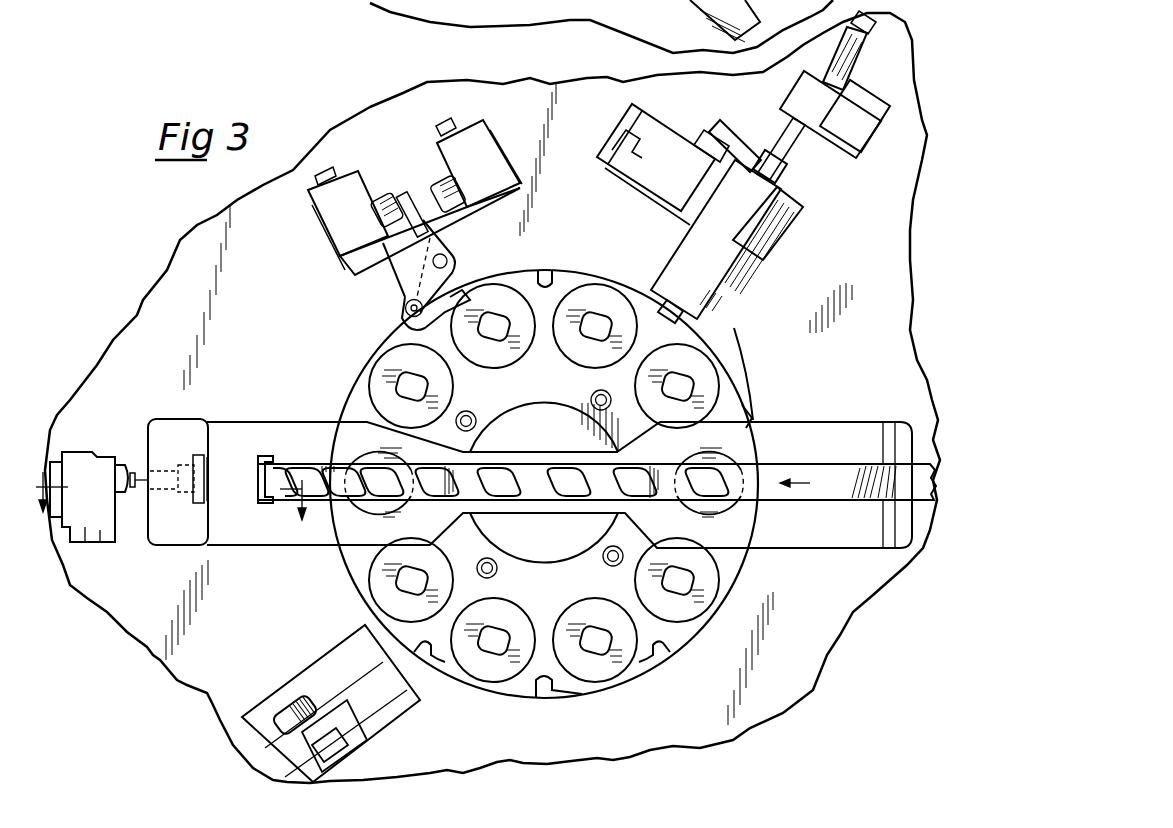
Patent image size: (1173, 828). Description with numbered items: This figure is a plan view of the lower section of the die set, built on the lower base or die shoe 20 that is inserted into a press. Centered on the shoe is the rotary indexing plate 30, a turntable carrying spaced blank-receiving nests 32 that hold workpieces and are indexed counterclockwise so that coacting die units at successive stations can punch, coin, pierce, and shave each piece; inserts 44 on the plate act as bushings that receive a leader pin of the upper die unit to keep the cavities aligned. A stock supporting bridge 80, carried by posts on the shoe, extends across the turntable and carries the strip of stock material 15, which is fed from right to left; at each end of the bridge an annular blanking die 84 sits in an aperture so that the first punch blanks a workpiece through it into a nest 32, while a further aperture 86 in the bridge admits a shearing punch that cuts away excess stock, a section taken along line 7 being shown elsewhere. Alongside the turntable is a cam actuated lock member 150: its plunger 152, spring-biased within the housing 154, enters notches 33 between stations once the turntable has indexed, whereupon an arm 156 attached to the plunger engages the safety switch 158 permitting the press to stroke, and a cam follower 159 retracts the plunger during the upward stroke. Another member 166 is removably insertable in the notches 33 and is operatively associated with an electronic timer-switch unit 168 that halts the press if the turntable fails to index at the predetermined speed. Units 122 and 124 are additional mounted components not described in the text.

The section line 7- 7 is at (170, 509).
The stock material 15 is at (828, 472).
The lower base or die shoe 20 is at (260, 281).
The rotary indexing plate 30 is at (740, 372).
The blank receiving nest 32 is at (570, 350).
The notch 33 is at (545, 272).
The insert 44 is at (472, 414).
The stock supporting bridge 80 is at (803, 533).
The blanking die 84 is at (360, 457).
The aperture 86 is at (262, 458).
The drive cylinder 122 is at (293, 700).
The bracket 124 is at (335, 703).
The cam actuated lock member 150 is at (755, 165).
The plunger 152 is at (798, 148).
The housing 154 is at (855, 62).
The arm 156 is at (738, 142).
The safety switch 158 is at (665, 183).
The cam follower 159 is at (780, 236).
The removably insertable member 166 is at (405, 300).
The electronic timer-switch unit 168 is at (403, 162).